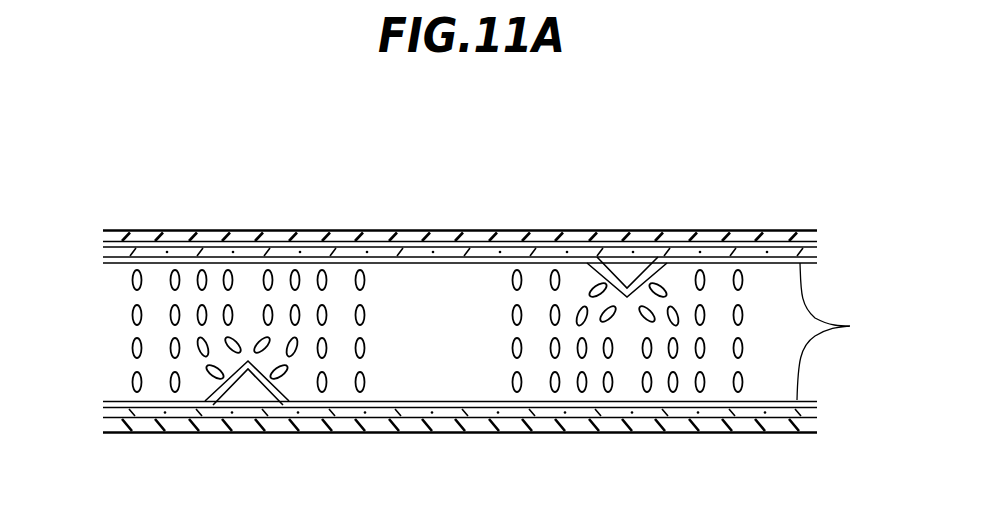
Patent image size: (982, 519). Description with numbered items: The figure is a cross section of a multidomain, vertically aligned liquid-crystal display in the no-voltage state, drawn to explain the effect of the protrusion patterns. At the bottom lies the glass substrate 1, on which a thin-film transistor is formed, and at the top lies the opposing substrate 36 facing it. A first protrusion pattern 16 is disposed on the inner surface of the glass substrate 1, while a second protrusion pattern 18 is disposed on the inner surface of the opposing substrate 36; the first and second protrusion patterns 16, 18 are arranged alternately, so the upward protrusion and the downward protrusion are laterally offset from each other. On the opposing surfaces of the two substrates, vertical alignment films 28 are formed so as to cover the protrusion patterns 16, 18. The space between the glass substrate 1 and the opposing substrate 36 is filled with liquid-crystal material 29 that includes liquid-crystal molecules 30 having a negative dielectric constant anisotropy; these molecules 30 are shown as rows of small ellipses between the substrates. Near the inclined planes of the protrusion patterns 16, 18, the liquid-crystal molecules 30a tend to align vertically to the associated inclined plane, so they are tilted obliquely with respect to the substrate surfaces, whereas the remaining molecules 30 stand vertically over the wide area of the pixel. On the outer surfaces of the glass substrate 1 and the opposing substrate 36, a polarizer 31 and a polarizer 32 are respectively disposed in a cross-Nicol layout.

The glass substrate 1 is at (773, 410).
The first protrusion pattern 16 is at (253, 393).
The second protrusion pattern 18 is at (640, 267).
The vertical alignment films 28 is at (845, 331).
The liquid-crystal material 29 is at (128, 334).
The liquid-crystal molecules 30 is at (704, 381).
The liquid-crystal molecules on inclined planes 30a is at (594, 287).
The polarizer 31 is at (113, 437).
The polarizer 32 is at (372, 237).
The opposing substrate 36 is at (777, 250).